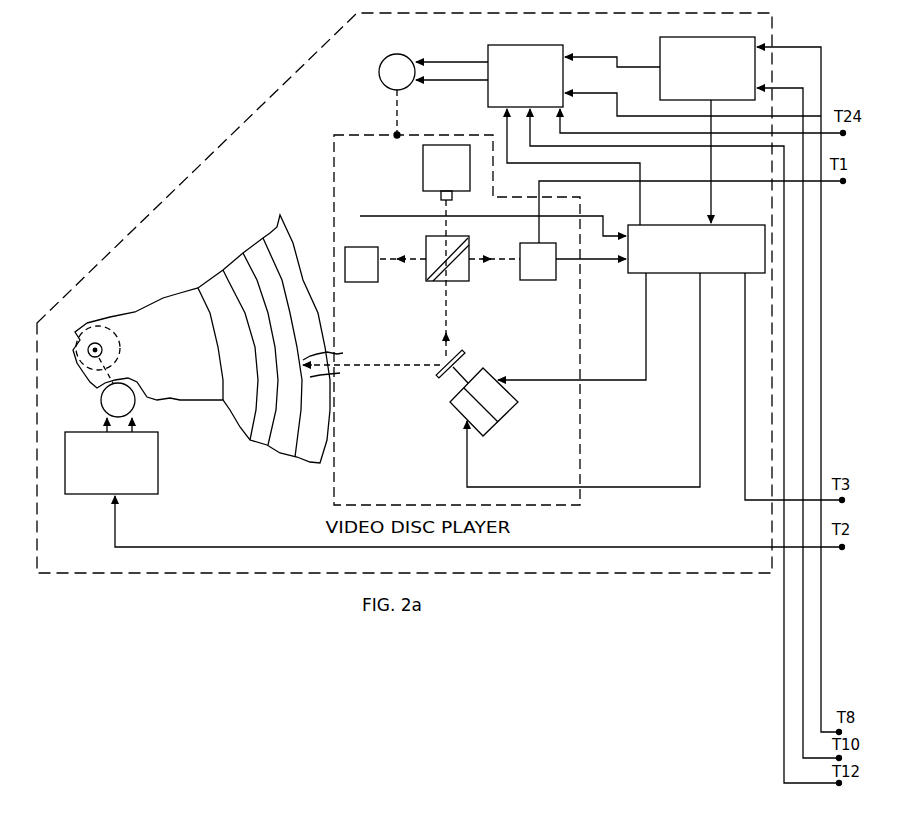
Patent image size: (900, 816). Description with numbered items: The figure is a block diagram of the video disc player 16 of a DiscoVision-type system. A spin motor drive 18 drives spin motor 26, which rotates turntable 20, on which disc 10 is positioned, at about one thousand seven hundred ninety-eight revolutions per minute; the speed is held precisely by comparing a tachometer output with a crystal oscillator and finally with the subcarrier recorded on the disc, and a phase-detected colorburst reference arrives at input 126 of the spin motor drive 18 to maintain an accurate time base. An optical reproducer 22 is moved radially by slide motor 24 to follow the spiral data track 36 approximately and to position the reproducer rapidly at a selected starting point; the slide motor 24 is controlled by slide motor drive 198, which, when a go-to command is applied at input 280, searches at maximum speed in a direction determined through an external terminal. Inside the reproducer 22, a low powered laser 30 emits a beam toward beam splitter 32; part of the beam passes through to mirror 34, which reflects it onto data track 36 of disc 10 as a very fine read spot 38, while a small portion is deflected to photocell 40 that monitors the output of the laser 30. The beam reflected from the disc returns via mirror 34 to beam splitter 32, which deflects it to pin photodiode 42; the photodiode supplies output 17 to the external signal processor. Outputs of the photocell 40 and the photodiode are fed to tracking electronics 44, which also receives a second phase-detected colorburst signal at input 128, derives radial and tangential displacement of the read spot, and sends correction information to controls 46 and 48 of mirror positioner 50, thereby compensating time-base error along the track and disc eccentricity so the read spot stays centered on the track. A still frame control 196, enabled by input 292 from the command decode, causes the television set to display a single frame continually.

The disc 10 is at (193, 290).
The disc player 16 is at (422, 49).
The output 17 is at (652, 181).
The spin motor drive 18 is at (158, 476).
The turntable 20 is at (87, 323).
The optical reproducer 22 is at (358, 135).
The slide motor 24 is at (379, 69).
The spin motor 26 is at (101, 402).
The laser 30 is at (423, 164).
The beam splitter 32 is at (426, 246).
The mirror 34 is at (464, 358).
The data track 36 is at (331, 384).
The read spot 38 is at (343, 353).
The photocell 40 is at (365, 282).
The pin photodiode 42 is at (520, 248).
The tracking electronics 44 is at (678, 224).
The control 46 is at (557, 380).
The control 48 is at (540, 487).
The mirror positioner 50 is at (518, 402).
The input 126 is at (120, 498).
The input 128 is at (745, 278).
The still frame control 196 is at (705, 37).
The slide motor drive 198 is at (527, 45).
The input 280 is at (568, 86).
The input 292 is at (768, 85).